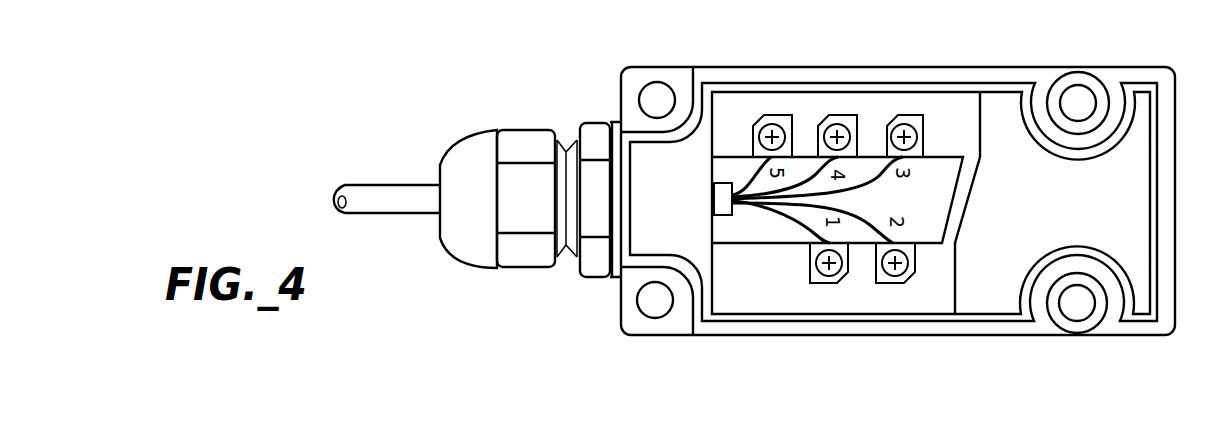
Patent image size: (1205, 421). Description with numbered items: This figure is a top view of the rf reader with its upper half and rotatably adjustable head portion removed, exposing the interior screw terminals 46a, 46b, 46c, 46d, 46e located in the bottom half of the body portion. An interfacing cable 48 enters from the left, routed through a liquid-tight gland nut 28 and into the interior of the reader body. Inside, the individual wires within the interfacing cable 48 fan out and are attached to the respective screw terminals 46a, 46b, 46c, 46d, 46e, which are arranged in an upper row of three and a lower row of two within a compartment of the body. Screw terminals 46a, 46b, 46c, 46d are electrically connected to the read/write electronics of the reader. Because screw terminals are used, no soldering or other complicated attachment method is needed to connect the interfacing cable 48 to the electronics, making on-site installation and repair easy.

The liquid-tight gland nut 28 is at (613, 292).
The interfacing cable 48 is at (400, 183).
The screw terminal 46a is at (774, 113).
The screw terminal 46b is at (841, 113).
The screw terminal 46c is at (919, 113).
The screw terminal 46d is at (830, 283).
The screw terminal 46e is at (896, 283).